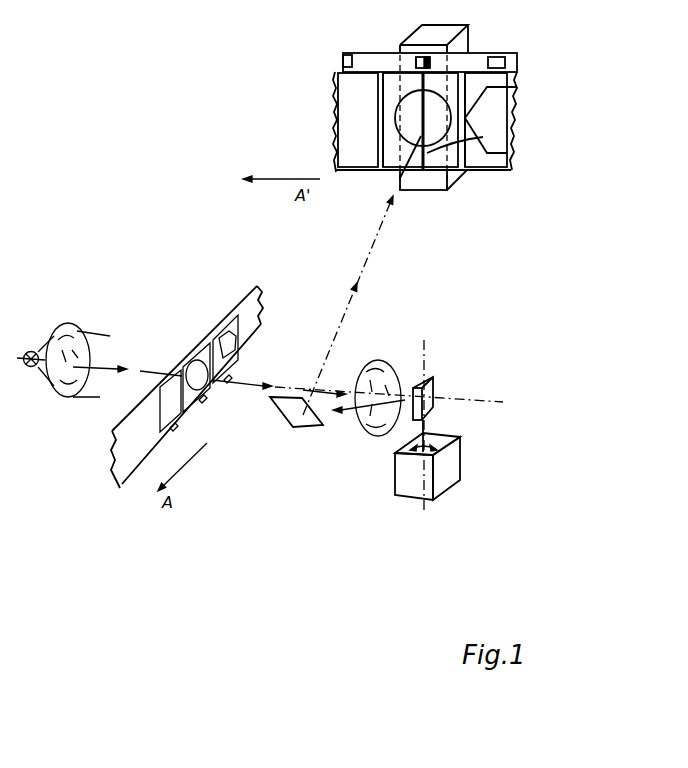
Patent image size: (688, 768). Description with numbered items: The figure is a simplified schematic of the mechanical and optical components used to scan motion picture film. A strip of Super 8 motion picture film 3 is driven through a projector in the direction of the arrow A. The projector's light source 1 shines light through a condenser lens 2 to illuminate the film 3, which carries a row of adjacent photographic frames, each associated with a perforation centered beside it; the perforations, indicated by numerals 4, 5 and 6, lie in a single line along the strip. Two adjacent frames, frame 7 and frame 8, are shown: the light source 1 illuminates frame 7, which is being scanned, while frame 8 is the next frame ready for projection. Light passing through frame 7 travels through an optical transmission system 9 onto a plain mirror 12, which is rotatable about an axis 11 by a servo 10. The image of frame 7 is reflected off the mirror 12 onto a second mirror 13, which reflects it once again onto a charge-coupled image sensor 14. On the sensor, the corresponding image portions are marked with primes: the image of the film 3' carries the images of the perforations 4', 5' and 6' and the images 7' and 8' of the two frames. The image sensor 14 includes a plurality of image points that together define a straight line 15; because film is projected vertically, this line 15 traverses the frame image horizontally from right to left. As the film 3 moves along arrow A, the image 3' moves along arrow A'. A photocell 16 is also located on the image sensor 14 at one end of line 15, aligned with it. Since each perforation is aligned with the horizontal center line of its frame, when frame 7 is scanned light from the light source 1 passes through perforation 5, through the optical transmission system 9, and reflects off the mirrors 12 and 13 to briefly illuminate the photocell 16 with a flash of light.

The light source 1 is at (31, 351).
The condenser lens 2 is at (73, 324).
The strip of motion picture film 3 is at (187, 406).
The marking 4 is at (183, 437).
The perforation 5 is at (212, 413).
The marking 6 is at (236, 394).
The frame 7 is at (189, 352).
The frame 8 is at (223, 330).
The optical transmission system 9 is at (378, 362).
The servo 10 is at (452, 462).
The axis 11 is at (425, 433).
The plain mirror 12 is at (433, 384).
The mirror 13 is at (273, 418).
The charge-coupled image sensor 14 is at (426, 181).
The straight line 15 is at (483, 137).
The photocell 16 is at (420, 58).
The image of the film 3' is at (509, 106).
The copied marking 4' is at (324, 54).
The image of perforation 5' is at (377, 41).
The copied marking 6' is at (500, 41).
The image of frame 7 7' is at (372, 139).
The image of frame 8 8' is at (505, 138).